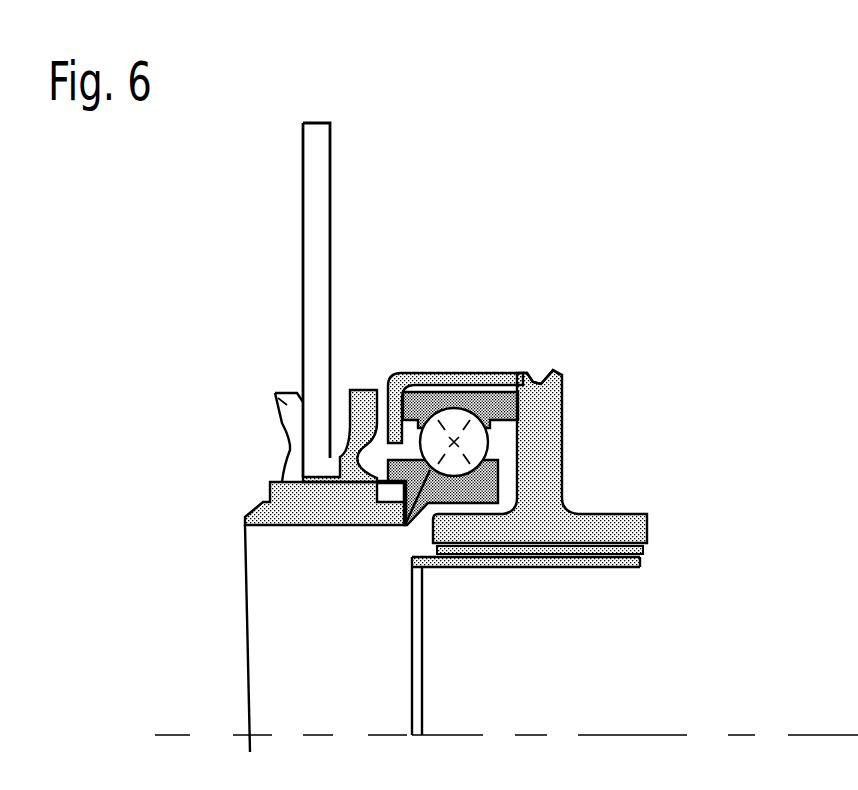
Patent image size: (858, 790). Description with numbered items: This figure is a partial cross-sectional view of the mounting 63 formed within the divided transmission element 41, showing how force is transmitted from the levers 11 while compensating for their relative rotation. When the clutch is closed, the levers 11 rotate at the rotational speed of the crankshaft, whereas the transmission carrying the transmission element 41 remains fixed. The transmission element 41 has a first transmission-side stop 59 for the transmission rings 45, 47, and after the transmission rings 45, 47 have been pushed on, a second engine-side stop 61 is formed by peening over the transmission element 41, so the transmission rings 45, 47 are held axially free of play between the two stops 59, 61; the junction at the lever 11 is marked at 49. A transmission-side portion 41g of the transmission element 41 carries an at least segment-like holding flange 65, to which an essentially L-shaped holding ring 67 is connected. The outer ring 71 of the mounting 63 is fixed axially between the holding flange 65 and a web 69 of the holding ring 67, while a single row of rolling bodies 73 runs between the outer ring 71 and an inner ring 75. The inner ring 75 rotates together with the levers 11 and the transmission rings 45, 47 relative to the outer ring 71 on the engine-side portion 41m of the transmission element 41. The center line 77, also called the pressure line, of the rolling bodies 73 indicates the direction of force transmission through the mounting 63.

The lever 11 is at (316, 180).
The transmission element 41 is at (488, 635).
The engine-side portion of the transmission element 41m is at (297, 530).
The transmission-side portion of the transmission element 41g is at (627, 512).
The transmission ring 45 is at (275, 394).
The transmission ring 47 is at (352, 390).
The junction 49 is at (308, 390).
The transmission-side stop 59 is at (393, 535).
The engine-side stop 61 is at (262, 500).
The mounting 63 is at (548, 298).
The holding flange 65 is at (562, 460).
The holding ring 67 is at (467, 372).
The web 69 is at (385, 392).
The outer ring 71 is at (527, 375).
The rolling body 73 is at (478, 447).
The inner ring 75 is at (413, 513).
The center line 77 is at (452, 422).